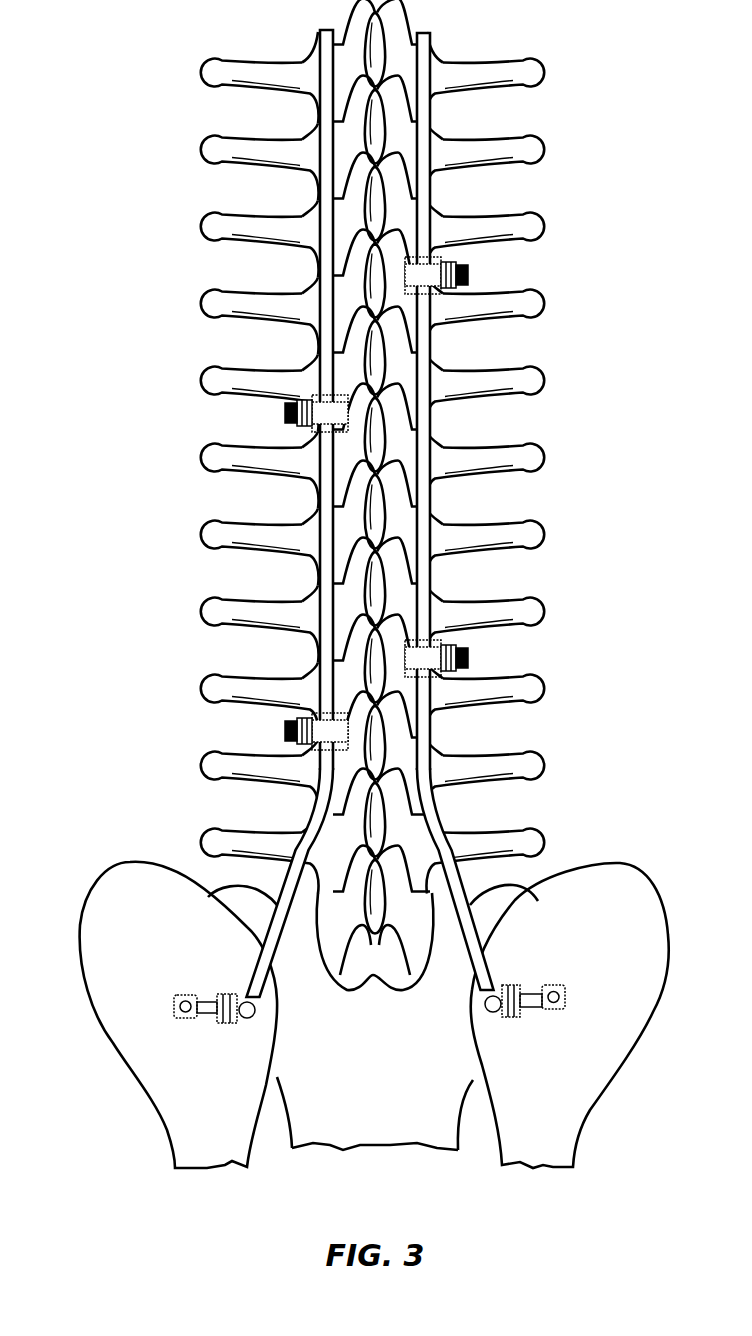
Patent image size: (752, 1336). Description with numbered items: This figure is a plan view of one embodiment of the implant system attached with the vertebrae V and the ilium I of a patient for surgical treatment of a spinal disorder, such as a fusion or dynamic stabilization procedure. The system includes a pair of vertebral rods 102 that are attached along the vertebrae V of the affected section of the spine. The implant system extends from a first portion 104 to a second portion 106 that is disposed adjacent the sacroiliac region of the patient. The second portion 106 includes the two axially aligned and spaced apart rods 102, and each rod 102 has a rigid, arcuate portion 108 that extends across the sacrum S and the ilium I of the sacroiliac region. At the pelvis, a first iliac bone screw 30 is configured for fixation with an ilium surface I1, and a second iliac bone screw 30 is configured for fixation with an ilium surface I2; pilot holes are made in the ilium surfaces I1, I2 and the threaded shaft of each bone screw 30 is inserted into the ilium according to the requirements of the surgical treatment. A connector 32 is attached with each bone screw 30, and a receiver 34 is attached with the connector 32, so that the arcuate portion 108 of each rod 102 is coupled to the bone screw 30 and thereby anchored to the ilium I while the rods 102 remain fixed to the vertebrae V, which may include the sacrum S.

The vertebral rod 102 is at (328, 347).
The first portion 104 is at (212, 427).
The second portion 106 is at (185, 813).
The arcuate portion 108 is at (320, 813).
The iliac bone screw 30 is at (588, 1062).
The connector 32 is at (540, 1007).
The receiver 34 is at (493, 1010).
The ilium I is at (133, 1020).
The ilium surface I1 is at (177, 983).
The ilium surface I2 is at (527, 960).
The sacrum S is at (316, 1121).
The vertebrae V is at (530, 688).